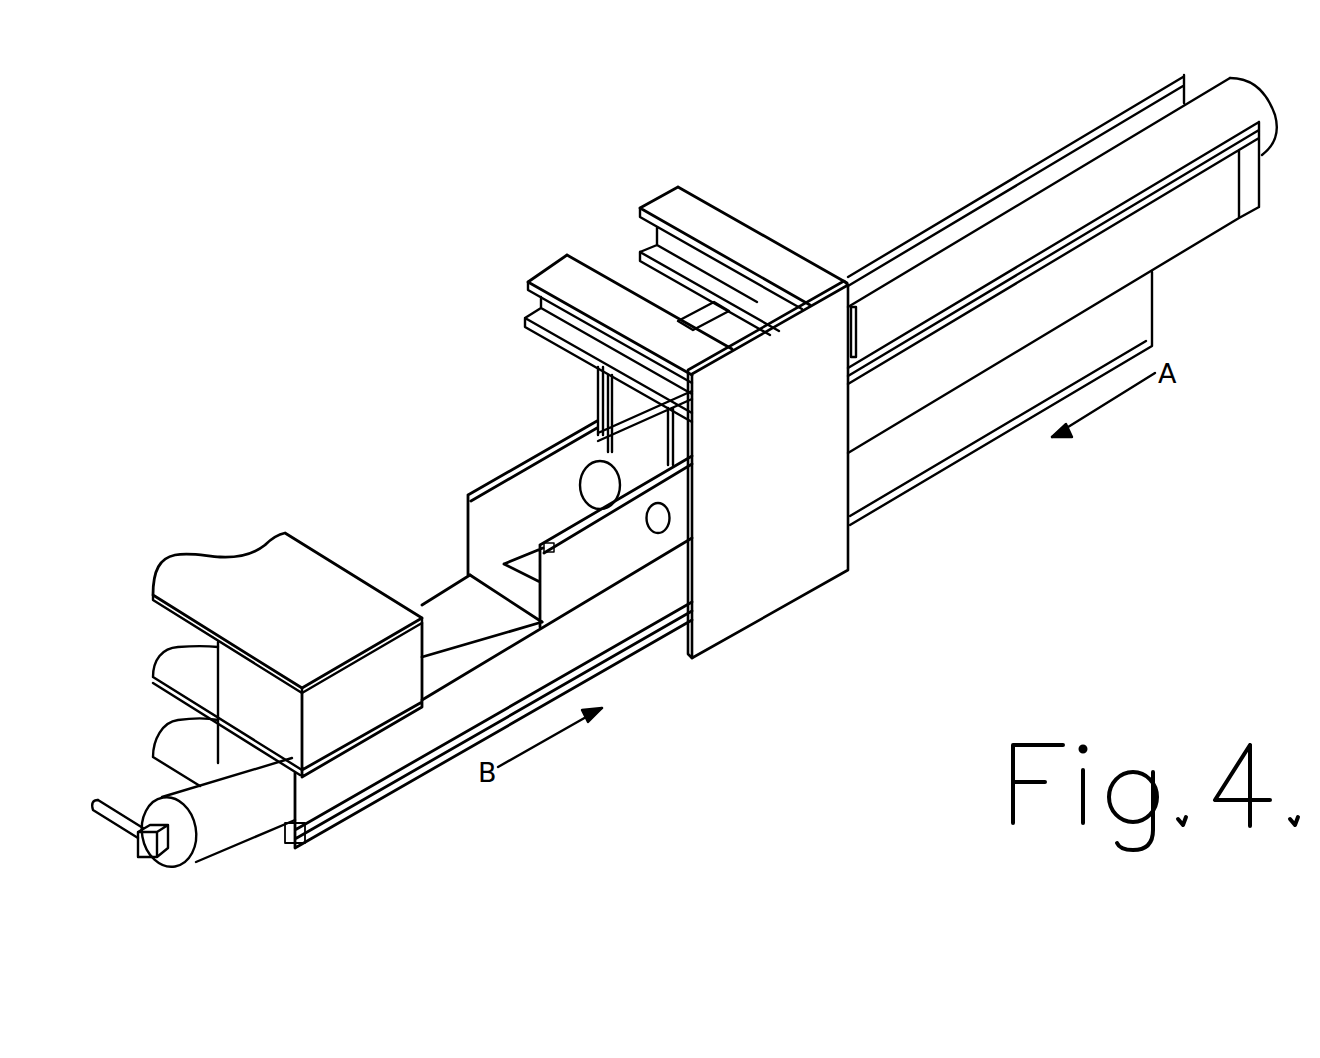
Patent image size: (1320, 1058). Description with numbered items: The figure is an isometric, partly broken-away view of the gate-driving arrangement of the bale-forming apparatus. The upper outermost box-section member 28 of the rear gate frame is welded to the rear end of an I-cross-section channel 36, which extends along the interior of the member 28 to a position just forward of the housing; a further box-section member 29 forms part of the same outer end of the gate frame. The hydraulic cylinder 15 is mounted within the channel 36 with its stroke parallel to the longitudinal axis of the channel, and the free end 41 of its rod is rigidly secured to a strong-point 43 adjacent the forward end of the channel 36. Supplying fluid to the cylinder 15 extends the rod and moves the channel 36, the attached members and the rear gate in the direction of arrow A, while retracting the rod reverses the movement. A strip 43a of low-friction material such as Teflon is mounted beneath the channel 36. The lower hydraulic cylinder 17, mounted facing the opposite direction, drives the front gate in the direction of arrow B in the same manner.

The hydraulic cylinder 15 is at (1242, 118).
The hydraulic cylinder 17 is at (201, 837).
The upper outermost box-section member 28 is at (225, 667).
The box-section member 29 is at (284, 823).
The I-cross-section channel 36 is at (933, 243).
The free end of rod 41 is at (535, 558).
The strong-point 43 is at (658, 534).
The low-friction strip 43a is at (472, 618).